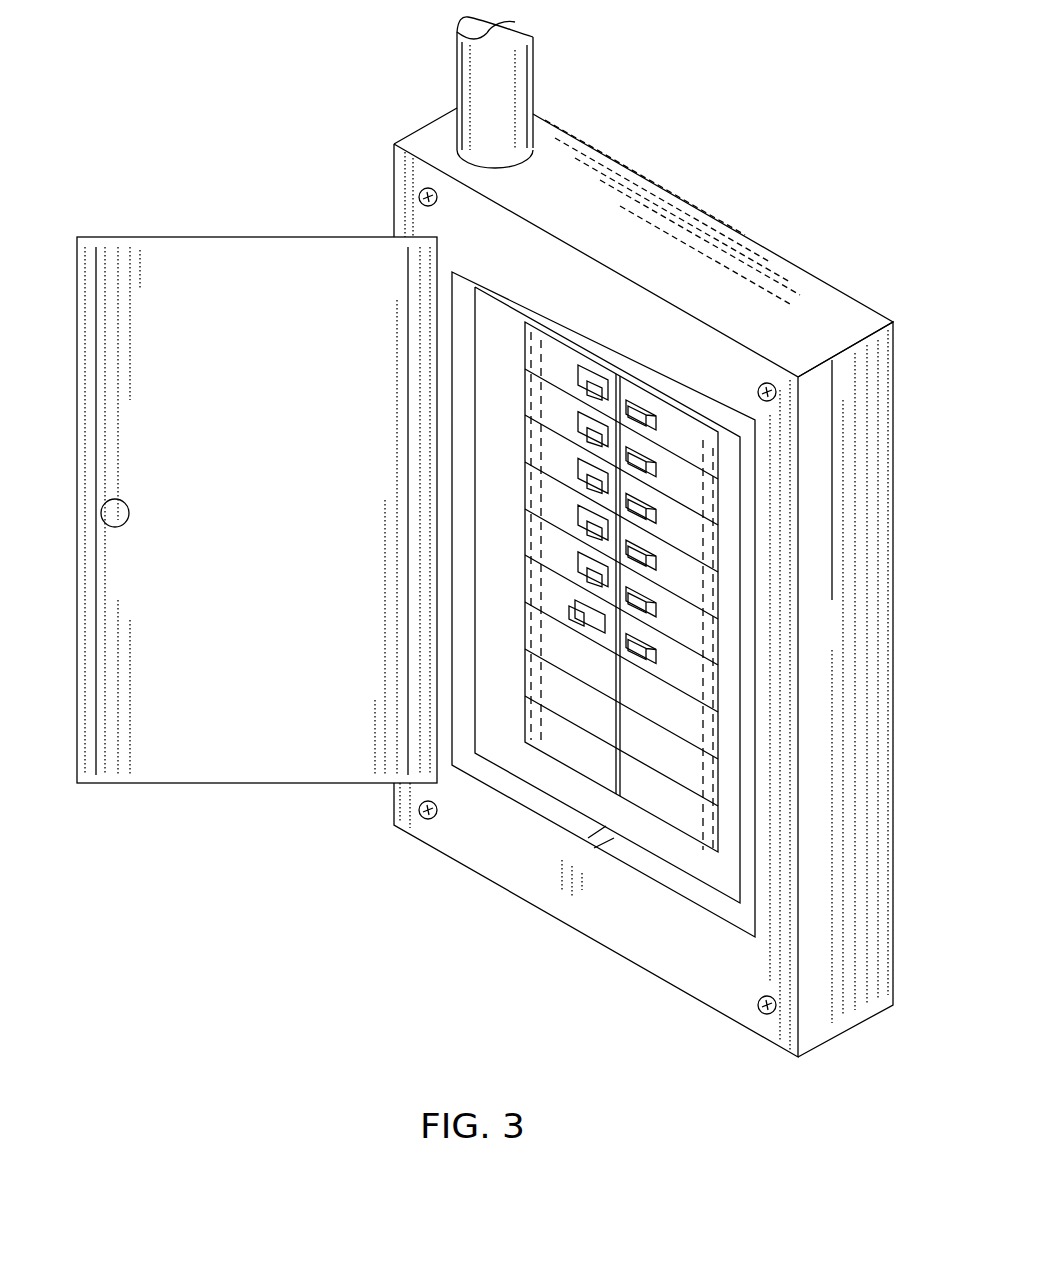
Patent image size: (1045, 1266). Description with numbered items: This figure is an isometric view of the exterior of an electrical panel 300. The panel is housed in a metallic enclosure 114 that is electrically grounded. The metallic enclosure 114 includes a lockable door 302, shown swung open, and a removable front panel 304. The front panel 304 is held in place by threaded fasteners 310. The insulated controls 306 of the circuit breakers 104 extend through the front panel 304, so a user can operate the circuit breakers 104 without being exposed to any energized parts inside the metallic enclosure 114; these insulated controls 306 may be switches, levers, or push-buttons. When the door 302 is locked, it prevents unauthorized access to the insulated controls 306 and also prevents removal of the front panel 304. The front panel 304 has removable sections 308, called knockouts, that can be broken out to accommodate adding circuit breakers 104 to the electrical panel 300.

The electrical panel 300 is at (636, 552).
The metallic enclosure 114 is at (780, 256).
The lockable door 302 is at (258, 237).
The removable front panel 304 is at (800, 735).
The insulated controls 306 is at (655, 404).
The circuit breakers 104 is at (598, 362).
The removable sections 308 is at (525, 670).
The threaded fasteners 310 is at (768, 1015).